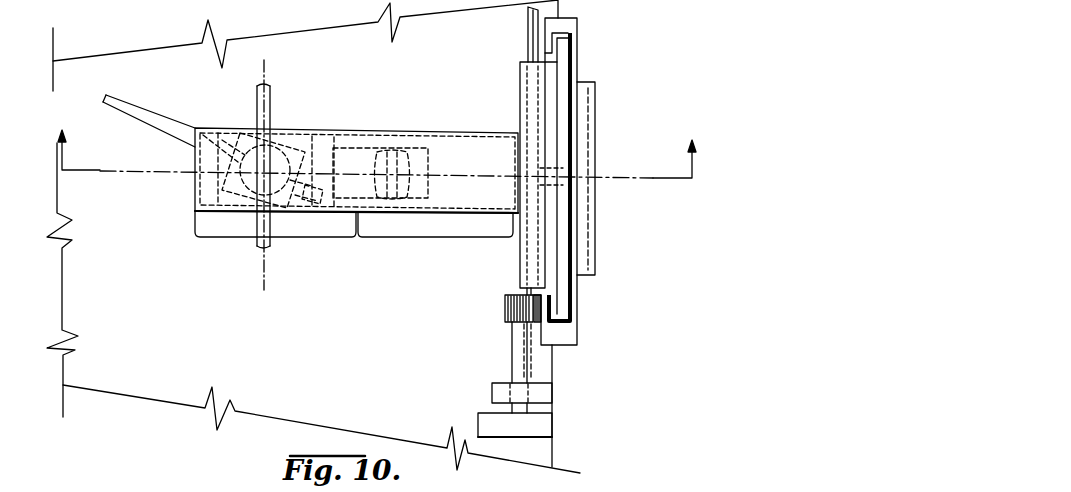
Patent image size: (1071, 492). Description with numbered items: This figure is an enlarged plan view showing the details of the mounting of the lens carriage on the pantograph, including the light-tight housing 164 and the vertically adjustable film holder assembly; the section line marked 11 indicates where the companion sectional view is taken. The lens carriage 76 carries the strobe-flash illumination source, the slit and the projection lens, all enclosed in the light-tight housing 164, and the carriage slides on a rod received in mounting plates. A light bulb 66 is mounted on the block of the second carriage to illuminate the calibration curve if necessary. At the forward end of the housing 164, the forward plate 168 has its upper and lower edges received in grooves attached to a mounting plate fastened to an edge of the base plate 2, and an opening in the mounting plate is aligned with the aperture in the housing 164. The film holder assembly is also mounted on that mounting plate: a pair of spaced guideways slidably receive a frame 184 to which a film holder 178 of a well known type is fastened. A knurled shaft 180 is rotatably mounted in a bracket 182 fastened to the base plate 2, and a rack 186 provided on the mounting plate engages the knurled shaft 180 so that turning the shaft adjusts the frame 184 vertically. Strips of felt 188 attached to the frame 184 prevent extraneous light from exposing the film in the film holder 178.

The base plate 2 is at (165, 45).
The section line 11- 11 is at (373, 142).
The light bulb 66 is at (143, 108).
The light-tight housing 164 is at (385, 133).
The lens carriage 76 is at (357, 239).
The forward plate 168 is at (528, 48).
The frame 184 is at (577, 22).
The strips of felt 188 is at (570, 108).
The film holder 178 is at (593, 197).
The knurled shaft 180 is at (505, 308).
The rack 186 is at (533, 325).
The bracket 182 is at (553, 393).